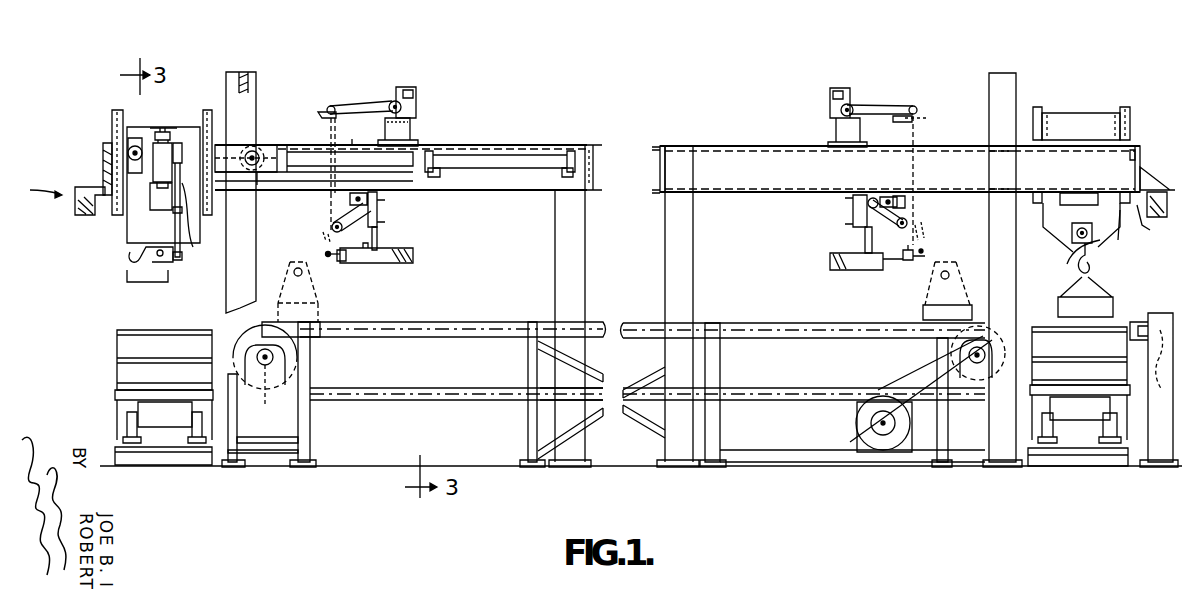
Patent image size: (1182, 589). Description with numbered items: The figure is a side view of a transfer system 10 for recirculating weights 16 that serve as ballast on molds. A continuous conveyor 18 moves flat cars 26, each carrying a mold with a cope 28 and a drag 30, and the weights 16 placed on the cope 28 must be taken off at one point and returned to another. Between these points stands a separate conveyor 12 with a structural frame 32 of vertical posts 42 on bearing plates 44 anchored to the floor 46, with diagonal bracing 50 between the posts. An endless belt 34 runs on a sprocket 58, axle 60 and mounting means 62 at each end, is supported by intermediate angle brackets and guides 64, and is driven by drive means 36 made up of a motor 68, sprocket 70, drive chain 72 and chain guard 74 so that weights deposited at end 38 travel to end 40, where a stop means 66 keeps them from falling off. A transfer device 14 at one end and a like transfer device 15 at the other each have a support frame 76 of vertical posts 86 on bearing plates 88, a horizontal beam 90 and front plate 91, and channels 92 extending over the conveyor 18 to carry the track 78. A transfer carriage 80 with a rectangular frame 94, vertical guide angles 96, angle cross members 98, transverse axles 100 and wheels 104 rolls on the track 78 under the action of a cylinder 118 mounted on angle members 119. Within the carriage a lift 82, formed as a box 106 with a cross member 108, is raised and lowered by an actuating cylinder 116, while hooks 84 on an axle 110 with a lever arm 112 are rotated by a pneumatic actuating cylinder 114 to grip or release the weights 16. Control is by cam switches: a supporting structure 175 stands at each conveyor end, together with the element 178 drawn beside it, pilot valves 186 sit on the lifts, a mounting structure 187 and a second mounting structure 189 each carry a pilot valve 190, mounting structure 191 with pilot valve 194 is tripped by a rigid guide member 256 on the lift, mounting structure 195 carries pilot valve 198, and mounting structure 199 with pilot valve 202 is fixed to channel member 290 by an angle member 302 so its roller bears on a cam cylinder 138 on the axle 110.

The transfer system 10 is at (535, 96).
The separate conveyor 12 is at (459, 310).
The transfer device 14 is at (143, 70).
The transfer device 15 is at (1090, 80).
The weights 16 is at (291, 268).
The continuous conveyor 18 is at (158, 468).
The flat cars 26 is at (150, 420).
The cope 28 is at (116, 344).
The drag 30 is at (116, 377).
The structural frame 32 is at (378, 400).
The endless belt 34 is at (400, 336).
The drive means 36 is at (843, 433).
The end 38 is at (327, 314).
The end 40 is at (897, 316).
The vertical posts 42 is at (527, 365).
The bearing plates 44 is at (522, 464).
The floor 46 is at (398, 464).
The diagonal bracing 50 is at (588, 370).
The sprocket 58 is at (243, 342).
The axle 60 is at (311, 352).
The mounting means 62 is at (264, 385).
The intermediate angle brackets and guides 64 is at (311, 376).
The stop means 66 is at (972, 303).
The motor 68 is at (856, 418).
The sprocket 70 is at (871, 432).
The drive chain 72 is at (912, 385).
The chain guard 74 is at (922, 365).
The support frame 76 is at (443, 145).
The track 78 is at (380, 131).
The transfer carriage 80 is at (263, 142).
The lift 82 is at (134, 128).
The hooks 84 is at (130, 256).
The vertical posts 86 is at (258, 196).
The bearing plates 88 is at (572, 468).
The horizontal beam 90 is at (593, 160).
The front plate 91 is at (110, 151).
The channel 92 is at (552, 146).
The frame 94 is at (260, 176).
The vertical guide angles 96 is at (113, 116).
The angle cross members 98 is at (158, 210).
The transverse axles 100 is at (249, 151).
The wheels 104 is at (261, 146).
The box 106 is at (1095, 112).
The cross member 108 is at (172, 128).
The axle 110 is at (1104, 252).
The lever arm 112 is at (180, 261).
The pneumatic actuating cylinder 114 is at (193, 245).
The actuating cylinder 116 is at (160, 166).
The cylinder 118 is at (503, 152).
The angle members 119 is at (441, 172).
The cam cylinder 138 is at (1064, 260).
The supporting structure 175 is at (1158, 308).
The wiring 178 is at (1160, 360).
The pilot valves 186 is at (1134, 226).
The mounting structure 187 is at (32, 191).
The second mounting structure 189 is at (1158, 180).
The pilot valve 190 is at (74, 213).
The mounting structure 191 is at (357, 98).
The pilot valve 194 is at (406, 88).
The mounting structure 195 is at (320, 230).
The pilot valve 198 is at (906, 204).
The mounting structure 199 is at (416, 254).
The pilot valve 202 is at (352, 262).
The rigid guide member 256 is at (1030, 108).
The channel member 290 is at (380, 207).
The angle member 302 is at (378, 238).